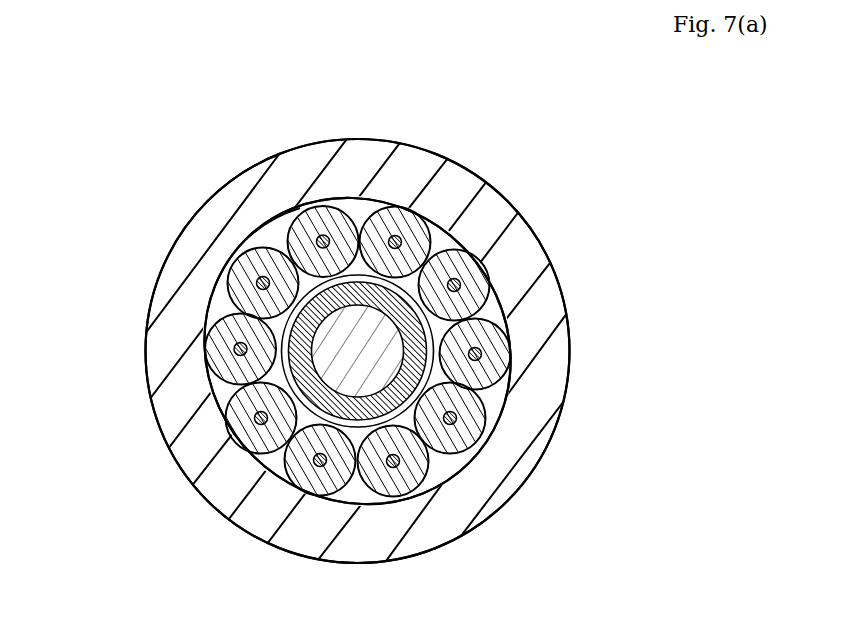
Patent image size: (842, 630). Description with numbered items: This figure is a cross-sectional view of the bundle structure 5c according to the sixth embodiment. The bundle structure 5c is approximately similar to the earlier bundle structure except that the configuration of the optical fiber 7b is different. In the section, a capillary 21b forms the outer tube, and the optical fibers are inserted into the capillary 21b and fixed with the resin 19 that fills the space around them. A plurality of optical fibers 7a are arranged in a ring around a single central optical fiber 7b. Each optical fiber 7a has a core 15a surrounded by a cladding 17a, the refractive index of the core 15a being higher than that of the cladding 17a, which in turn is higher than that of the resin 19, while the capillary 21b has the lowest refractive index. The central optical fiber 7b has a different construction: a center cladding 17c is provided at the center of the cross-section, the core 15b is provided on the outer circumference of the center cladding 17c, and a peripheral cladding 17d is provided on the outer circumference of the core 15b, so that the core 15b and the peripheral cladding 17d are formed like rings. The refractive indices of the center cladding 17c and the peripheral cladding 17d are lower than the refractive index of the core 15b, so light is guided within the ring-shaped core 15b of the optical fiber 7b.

The bundle structure 5c is at (221, 298).
The capillary 21b is at (525, 250).
The peripheral cladding 17d is at (454, 466).
The resin 19 is at (280, 233).
The center cladding 17c is at (323, 353).
The optical fiber 7b is at (427, 382).
The cladding 17a is at (477, 320).
The core 15b is at (485, 400).
The core 15a is at (473, 300).
The optical fiber 7a is at (227, 422).